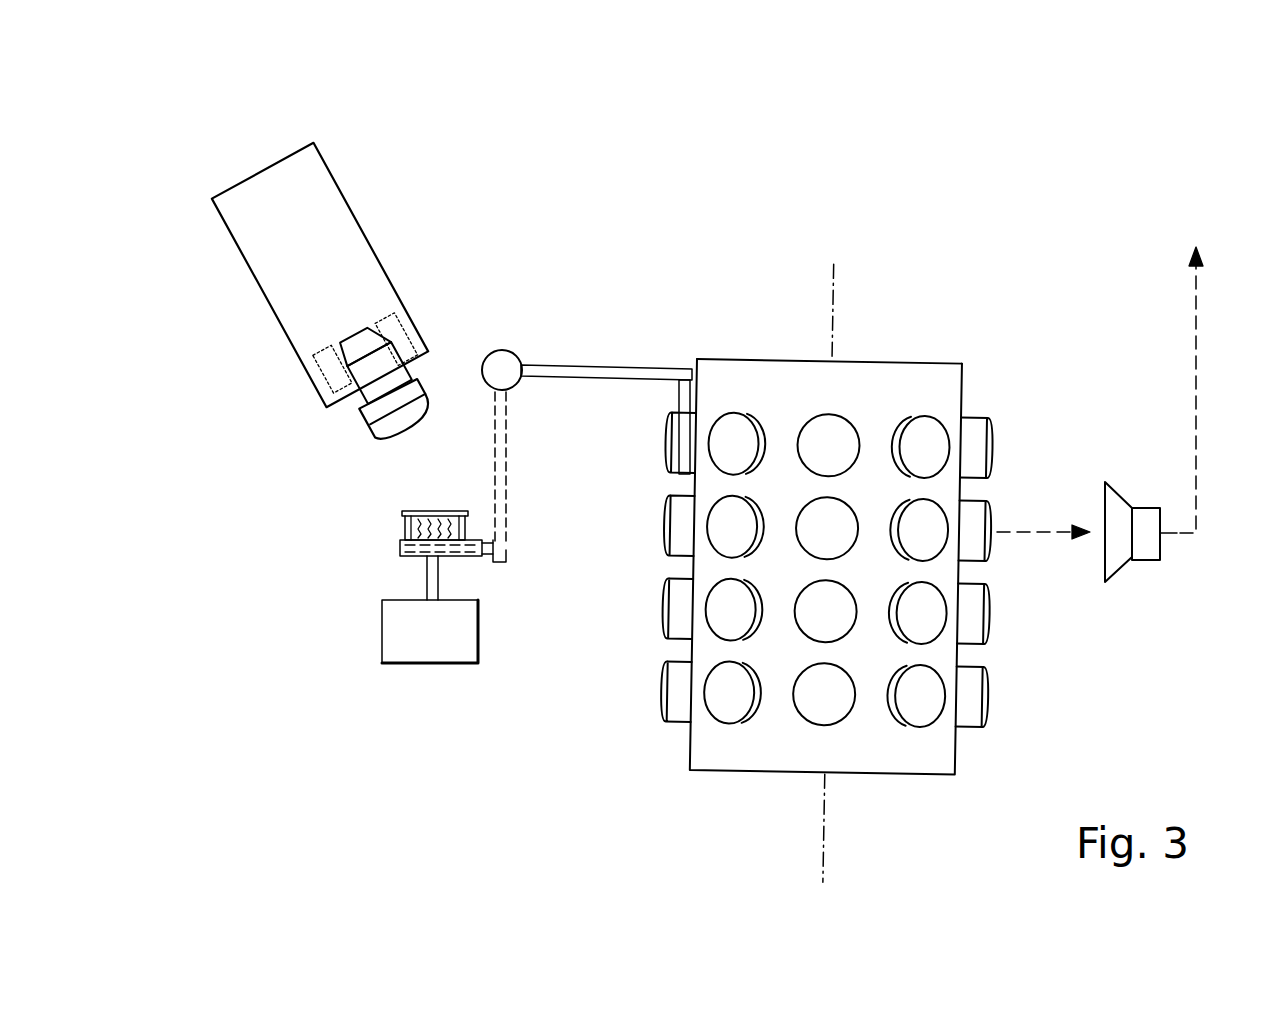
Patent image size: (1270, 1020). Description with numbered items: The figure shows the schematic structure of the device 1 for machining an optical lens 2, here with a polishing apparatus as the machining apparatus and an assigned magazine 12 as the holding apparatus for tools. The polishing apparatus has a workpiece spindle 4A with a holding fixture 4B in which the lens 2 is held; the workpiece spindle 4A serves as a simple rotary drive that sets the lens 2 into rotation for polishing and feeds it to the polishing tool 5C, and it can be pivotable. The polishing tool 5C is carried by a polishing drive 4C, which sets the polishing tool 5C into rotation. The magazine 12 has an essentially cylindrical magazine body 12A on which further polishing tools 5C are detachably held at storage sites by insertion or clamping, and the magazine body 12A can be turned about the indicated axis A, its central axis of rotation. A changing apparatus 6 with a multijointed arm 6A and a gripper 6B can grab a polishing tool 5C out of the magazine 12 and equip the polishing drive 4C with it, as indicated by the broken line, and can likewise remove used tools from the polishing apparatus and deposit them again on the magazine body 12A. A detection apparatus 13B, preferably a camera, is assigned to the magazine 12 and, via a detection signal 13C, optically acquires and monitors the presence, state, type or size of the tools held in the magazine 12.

The device 1 is at (582, 168).
The optical lens 2 is at (381, 382).
The workpiece spindle 4A is at (320, 275).
The holding fixture 4B is at (365, 355).
The polishing drive 4C is at (402, 622).
The polishing tool 5C is at (403, 527).
The changing apparatus 6 is at (517, 353).
The arm 6A is at (623, 367).
The gripper 6B is at (680, 392).
The magazine 12 is at (657, 538).
The magazine body 12A is at (895, 382).
The axis A is at (838, 263).
The detection apparatus 13B is at (1118, 552).
The detection signal 13C is at (1040, 532).